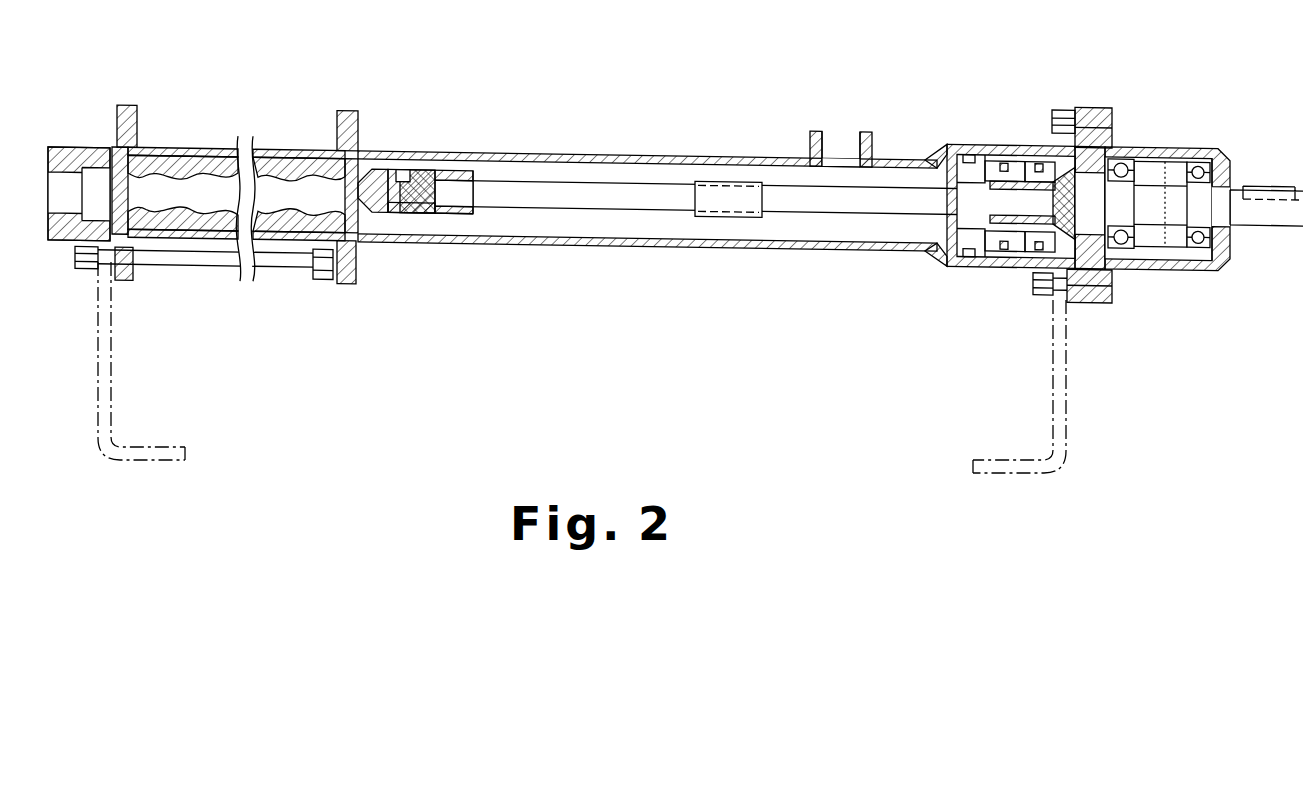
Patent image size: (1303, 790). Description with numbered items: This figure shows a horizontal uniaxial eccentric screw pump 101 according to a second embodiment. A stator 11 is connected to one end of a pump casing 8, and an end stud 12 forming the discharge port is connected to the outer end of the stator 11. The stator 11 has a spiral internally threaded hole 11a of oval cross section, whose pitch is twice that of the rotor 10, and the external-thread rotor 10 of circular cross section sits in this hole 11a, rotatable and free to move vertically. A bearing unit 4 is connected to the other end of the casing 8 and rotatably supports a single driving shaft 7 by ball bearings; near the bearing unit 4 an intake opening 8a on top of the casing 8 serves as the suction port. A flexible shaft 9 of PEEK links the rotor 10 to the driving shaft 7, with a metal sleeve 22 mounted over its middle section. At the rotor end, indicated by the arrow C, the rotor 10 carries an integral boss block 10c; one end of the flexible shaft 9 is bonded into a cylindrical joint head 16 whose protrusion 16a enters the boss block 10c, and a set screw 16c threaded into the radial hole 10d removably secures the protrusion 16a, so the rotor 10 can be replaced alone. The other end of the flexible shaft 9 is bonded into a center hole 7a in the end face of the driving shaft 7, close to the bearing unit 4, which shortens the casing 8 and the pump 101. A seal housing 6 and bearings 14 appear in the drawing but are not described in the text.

The uniaxial eccentric screw pump 101 is at (606, 357).
The end stud 12 is at (68, 147).
The stator 11 is at (175, 202).
The spiral internally threaded hole 11a is at (238, 217).
The rotor 10 is at (329, 171).
The boss block 10c is at (397, 180).
The internally threaded set screw hole 10d is at (430, 171).
The cylindrical joint head 16 is at (464, 208).
The set screw 16c is at (406, 164).
The protrusion 16a is at (392, 212).
The flexible shaft 9 is at (667, 184).
The sleeve 22 is at (718, 200).
The pump casing 8 is at (652, 162).
The intake opening 8a is at (840, 143).
The seal housing 6 is at (990, 196).
The center hole 7a is at (957, 212).
The bearing unit 4 is at (1122, 147).
The driving shaft 7 is at (1204, 209).
The bearings 14 is at (1197, 242).
The boss block joint C is at (452, 229).